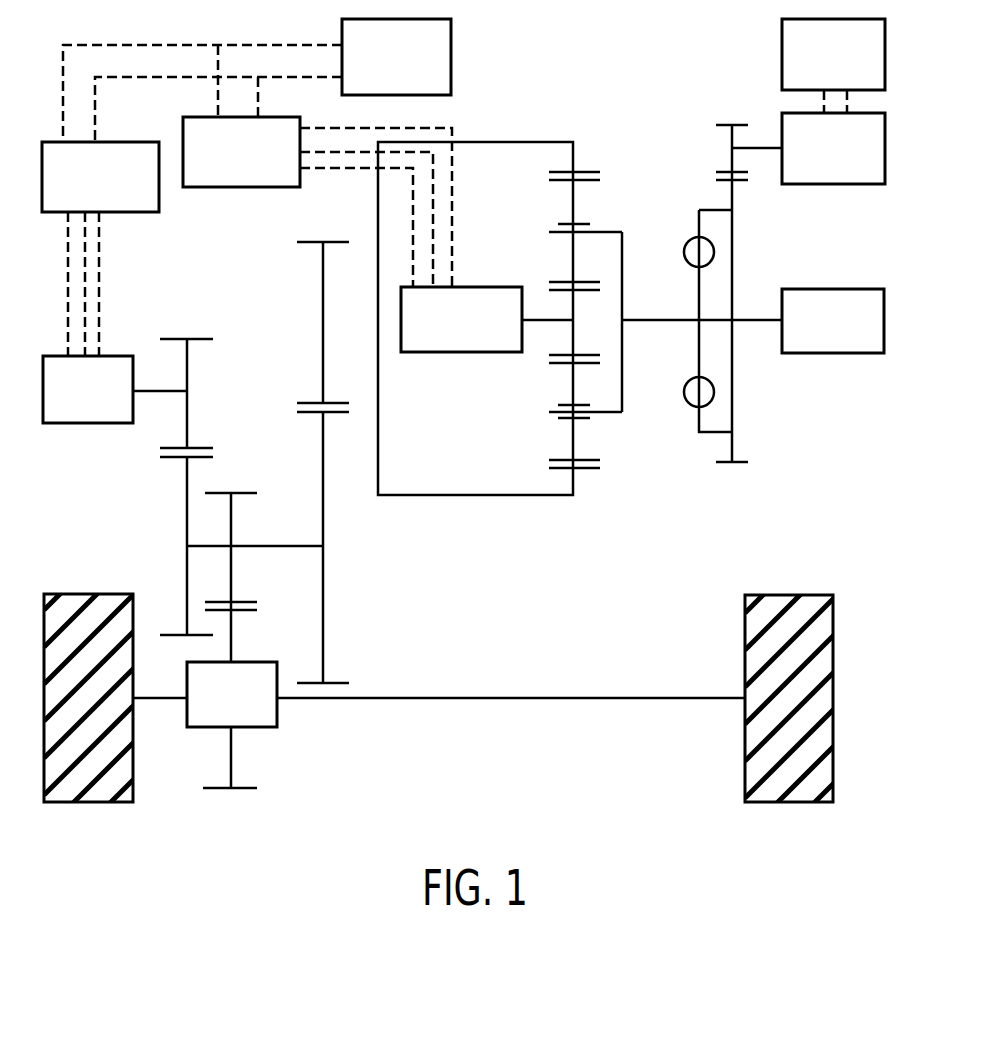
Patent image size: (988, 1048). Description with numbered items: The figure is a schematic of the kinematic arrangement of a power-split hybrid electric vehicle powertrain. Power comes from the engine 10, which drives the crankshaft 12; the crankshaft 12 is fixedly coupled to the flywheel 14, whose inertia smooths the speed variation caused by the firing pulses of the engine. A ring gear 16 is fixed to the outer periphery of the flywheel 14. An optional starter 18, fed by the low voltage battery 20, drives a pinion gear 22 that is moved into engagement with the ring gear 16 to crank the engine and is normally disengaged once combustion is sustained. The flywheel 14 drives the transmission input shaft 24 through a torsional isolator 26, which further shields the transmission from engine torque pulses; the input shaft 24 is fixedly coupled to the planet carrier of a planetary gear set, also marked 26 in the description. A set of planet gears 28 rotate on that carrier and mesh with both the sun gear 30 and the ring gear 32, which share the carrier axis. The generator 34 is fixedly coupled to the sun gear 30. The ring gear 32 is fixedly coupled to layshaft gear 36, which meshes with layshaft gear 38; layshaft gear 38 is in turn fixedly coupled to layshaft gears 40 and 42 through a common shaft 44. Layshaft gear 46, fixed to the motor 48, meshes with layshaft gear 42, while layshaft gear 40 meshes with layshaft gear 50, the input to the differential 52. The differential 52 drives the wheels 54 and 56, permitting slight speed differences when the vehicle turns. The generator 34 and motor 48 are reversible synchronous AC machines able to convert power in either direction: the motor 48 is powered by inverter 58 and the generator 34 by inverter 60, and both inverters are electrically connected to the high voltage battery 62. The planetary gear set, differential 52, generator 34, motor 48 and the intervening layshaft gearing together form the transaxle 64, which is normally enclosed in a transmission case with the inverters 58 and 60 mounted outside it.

The engine 10 is at (818, 353).
The crankshaft 12 is at (747, 322).
The flywheel 14 is at (733, 415).
The ring gear 16 is at (732, 192).
The starter 18 is at (867, 184).
The low voltage battery 20 is at (782, 70).
The pinion gear 22 is at (732, 158).
The transmission input shaft 24 is at (642, 320).
The torsional isolator 26 is at (690, 238).
The planet gears 28 is at (573, 438).
The sun gear 30 is at (572, 303).
The ring gear 32 is at (573, 485).
The generator 34 is at (485, 352).
The layshaft gear 36 is at (323, 300).
The layshaft gear 38 is at (322, 643).
The layshaft gear 40 is at (231, 522).
The layshaft gear 42 is at (187, 493).
The shaft 44 is at (267, 546).
The layshaft gear 46 is at (187, 370).
The motor 48 is at (62, 423).
The layshaft gear 50 is at (231, 762).
The differential 52 is at (277, 708).
The wheel 54 is at (93, 594).
The wheel 56 is at (745, 715).
The inverter 58 is at (118, 212).
The inverter 60 is at (213, 187).
The high voltage battery 62 is at (451, 72).
The transaxle 64 is at (529, 568).